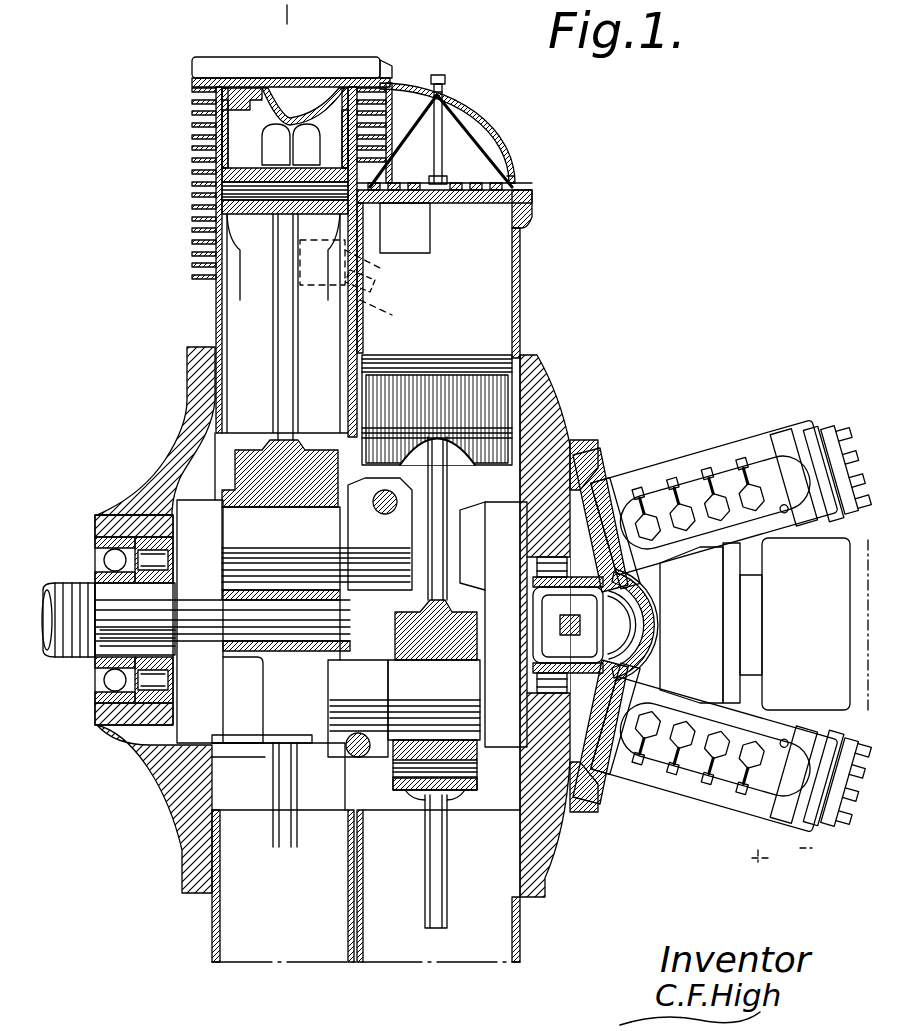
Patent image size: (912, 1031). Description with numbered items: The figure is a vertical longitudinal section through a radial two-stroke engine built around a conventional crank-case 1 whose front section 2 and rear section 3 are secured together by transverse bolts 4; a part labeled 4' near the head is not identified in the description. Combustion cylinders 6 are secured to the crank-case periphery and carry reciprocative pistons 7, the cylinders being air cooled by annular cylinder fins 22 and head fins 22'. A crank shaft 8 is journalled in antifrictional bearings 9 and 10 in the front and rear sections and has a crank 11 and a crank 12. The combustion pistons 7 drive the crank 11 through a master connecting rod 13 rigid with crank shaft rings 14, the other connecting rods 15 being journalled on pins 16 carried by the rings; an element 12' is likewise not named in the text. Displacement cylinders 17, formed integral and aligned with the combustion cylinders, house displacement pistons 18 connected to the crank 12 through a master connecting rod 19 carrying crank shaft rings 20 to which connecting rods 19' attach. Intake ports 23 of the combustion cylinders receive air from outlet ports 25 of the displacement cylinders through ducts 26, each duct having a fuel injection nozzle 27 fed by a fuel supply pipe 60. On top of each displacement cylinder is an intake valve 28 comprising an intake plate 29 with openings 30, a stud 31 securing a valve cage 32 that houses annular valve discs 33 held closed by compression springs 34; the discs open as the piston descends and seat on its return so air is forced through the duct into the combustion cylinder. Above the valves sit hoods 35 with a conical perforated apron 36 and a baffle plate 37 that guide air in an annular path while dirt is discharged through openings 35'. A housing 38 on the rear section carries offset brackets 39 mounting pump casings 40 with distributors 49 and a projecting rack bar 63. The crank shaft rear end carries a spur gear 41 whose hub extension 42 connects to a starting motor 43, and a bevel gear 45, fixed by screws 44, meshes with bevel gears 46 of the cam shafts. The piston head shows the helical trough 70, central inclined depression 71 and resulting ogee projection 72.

The crank-case 1 is at (169, 831).
The front section 2 is at (118, 765).
The rear section 3 is at (665, 255).
The transverse bolts 4 is at (474, 615).
The head flange 4' is at (376, 51).
The combustion cylinders 6 is at (212, 308).
The reciprocative pistons 7 is at (192, 124).
The crank shaft 8 is at (75, 590).
The antifrictional bearing 9 is at (125, 540).
The antifrictional bearing 10 is at (540, 557).
The crank 11 is at (316, 520).
The crank 12 is at (405, 680).
The lower piston head 12' is at (454, 777).
The master connecting rod 13 is at (272, 354).
The crank shaft rings 14 is at (252, 657).
The connecting rods 15 is at (258, 772).
The pins 16 is at (338, 620).
The displacement cylinders 17 is at (519, 314).
The displacement pistons 18 is at (462, 358).
The master connecting rod 19 is at (460, 518).
The connecting rods 19' is at (464, 861).
The crank shaft rings 20 is at (412, 795).
The annular cylinder fins 22 is at (258, 183).
The head fins 22' is at (291, 56).
The intake ports 23 is at (330, 285).
The outlet ports 25 is at (400, 272).
The ducts 26 is at (370, 318).
The fuel injection nozzle 27 is at (395, 295).
The intake valves 28 is at (452, 174).
The intake plate 29 is at (510, 182).
The openings 30 is at (406, 187).
The stud 31 is at (446, 100).
The valve cage 32 is at (510, 222).
The annular valve discs 33 is at (440, 192).
The compression springs 34 is at (462, 205).
The hoods 35 is at (458, 126).
The openings 35' is at (537, 159).
The conical perforated apron 36 is at (474, 134).
The baffle plate 37 is at (400, 95).
The housing 38 is at (618, 472).
The offset brackets 39 is at (648, 482).
The casings 40 is at (745, 457).
The spur gear 41 is at (540, 570).
The hub extension 42 is at (648, 642).
The starting motor 43 is at (764, 624).
The screws 44 is at (569, 625).
The bevel gear 45 is at (650, 620).
The bevel gears 46 is at (610, 480).
The distributors 49 is at (800, 447).
The fuel supply pipe 60 is at (708, 472).
The rack bar 63 is at (822, 442).
The helical trough 70 is at (240, 100).
The central inclined depression 71 is at (304, 104).
The projection 72 is at (268, 92).